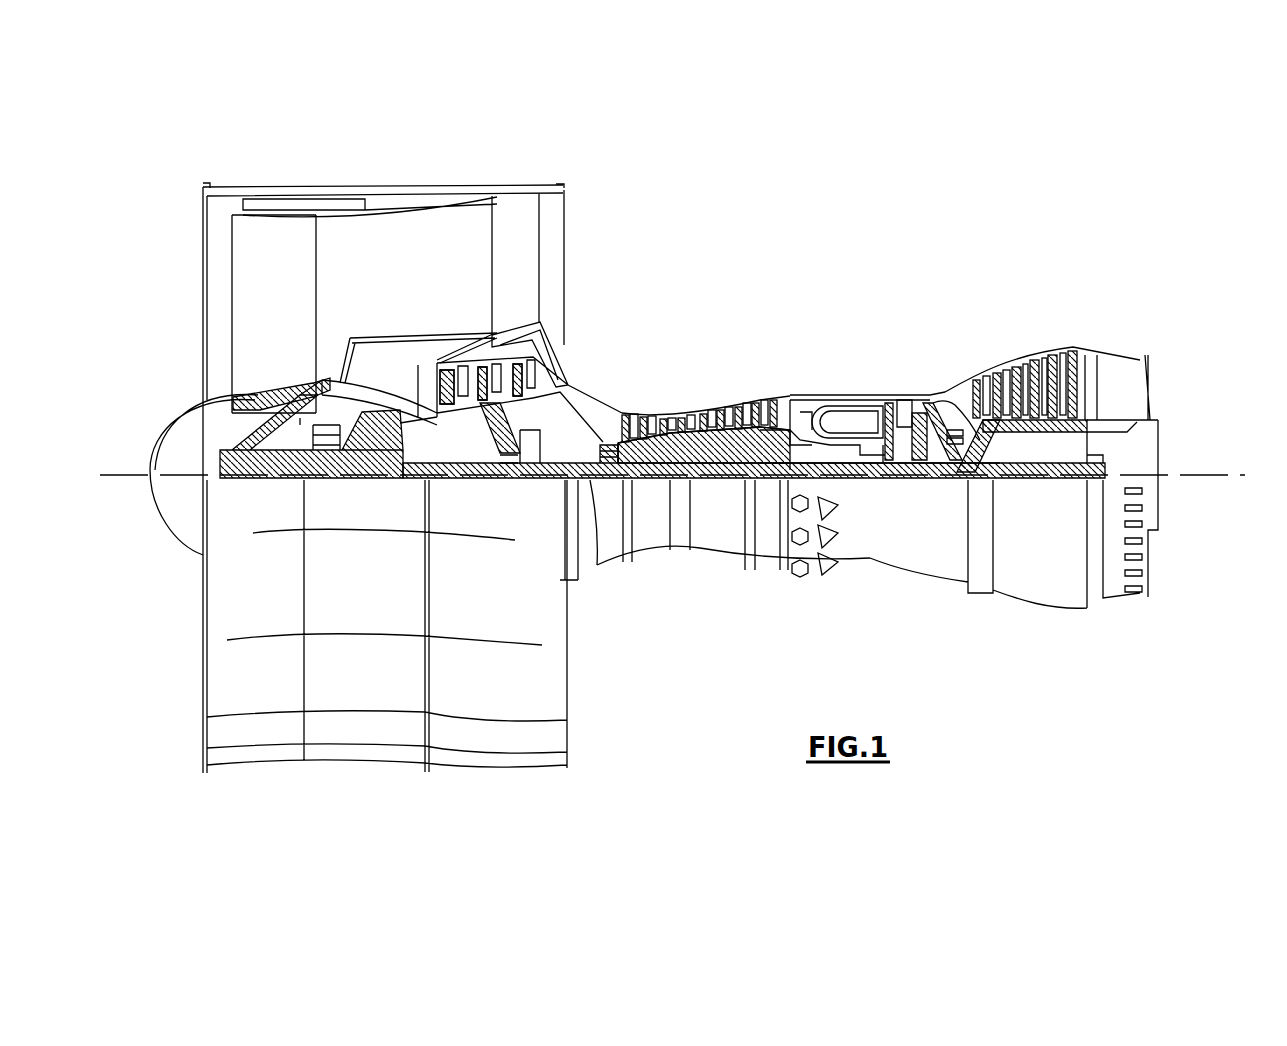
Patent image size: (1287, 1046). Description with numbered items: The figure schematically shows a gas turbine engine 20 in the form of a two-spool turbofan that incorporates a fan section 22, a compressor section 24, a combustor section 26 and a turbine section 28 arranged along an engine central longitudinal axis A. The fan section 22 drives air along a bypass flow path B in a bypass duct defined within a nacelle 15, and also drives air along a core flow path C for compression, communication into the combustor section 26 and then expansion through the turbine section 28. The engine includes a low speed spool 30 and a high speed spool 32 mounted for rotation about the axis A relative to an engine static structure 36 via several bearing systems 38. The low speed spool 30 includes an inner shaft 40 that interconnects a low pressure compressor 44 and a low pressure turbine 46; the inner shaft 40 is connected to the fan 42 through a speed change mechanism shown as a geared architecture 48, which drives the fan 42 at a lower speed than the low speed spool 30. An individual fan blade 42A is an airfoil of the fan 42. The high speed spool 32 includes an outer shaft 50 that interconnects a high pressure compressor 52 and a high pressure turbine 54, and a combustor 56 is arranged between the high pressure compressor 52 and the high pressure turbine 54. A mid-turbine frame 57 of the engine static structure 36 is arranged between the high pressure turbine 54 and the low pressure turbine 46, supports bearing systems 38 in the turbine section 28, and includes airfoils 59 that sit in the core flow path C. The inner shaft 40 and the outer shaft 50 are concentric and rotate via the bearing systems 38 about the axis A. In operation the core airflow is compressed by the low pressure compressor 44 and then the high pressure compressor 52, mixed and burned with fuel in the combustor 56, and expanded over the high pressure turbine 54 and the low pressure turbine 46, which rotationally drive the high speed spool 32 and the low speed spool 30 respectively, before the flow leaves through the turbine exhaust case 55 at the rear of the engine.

The gas turbine engine 20 is at (845, 243).
The nacelle 15 is at (385, 192).
The fan section 22 is at (315, 185).
The fan 42 is at (289, 318).
The fan blade 42A is at (232, 331).
The bypass flow path B is at (350, 266).
The core flow path C is at (395, 374).
The low pressure compressor 44 is at (483, 385).
The geared architecture 48 is at (390, 462).
The bearing systems 38 is at (518, 470).
The compressor section 24 is at (617, 390).
The high pressure compressor 52 is at (688, 438).
The combustor section 26 is at (838, 374).
The high speed spool 32 is at (764, 432).
The combustor 56 is at (848, 420).
The high pressure turbine 54 is at (905, 402).
The mid-turbine frame 57 is at (945, 396).
The outer shaft 50 is at (845, 458).
The turbine section 28 is at (985, 340).
The low pressure turbine 46 is at (1030, 380).
The airfoils 59 is at (978, 440).
The inner shaft 40 is at (590, 557).
The low speed spool 30 is at (723, 482).
The engine static structure 36 is at (765, 568).
The turbine exhaust case 55 is at (1127, 598).
The engine central longitudinal axis A is at (1240, 475).